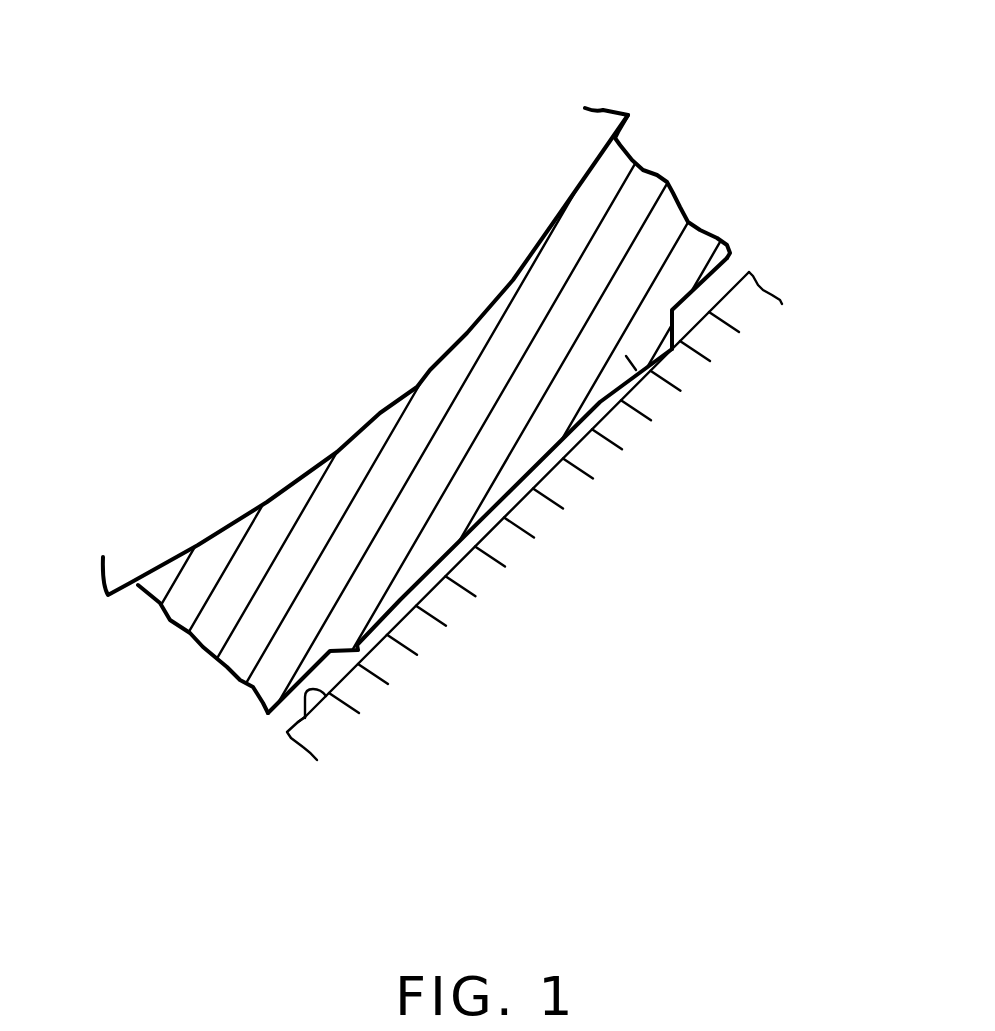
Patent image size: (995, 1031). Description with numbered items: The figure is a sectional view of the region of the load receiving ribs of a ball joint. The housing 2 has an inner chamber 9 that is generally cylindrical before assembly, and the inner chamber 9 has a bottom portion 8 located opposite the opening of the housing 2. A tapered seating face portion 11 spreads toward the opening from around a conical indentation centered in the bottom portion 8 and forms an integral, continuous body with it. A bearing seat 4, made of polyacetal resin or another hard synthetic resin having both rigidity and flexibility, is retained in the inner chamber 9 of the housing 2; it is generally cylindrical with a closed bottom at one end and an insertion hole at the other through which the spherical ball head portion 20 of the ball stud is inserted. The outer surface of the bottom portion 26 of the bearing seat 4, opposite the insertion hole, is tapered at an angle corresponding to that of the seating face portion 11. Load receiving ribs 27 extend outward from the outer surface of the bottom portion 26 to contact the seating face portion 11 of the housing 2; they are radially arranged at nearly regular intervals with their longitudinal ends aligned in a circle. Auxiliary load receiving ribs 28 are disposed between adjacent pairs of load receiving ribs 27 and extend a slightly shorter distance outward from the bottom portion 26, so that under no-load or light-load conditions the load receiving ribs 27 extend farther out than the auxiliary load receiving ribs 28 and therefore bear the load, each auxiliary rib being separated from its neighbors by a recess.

The housing 2 is at (757, 299).
The bearing seat 4 is at (657, 213).
The bottom portion 8 is at (332, 723).
The inner chamber 9 is at (300, 705).
The tapered seating face portion 11 is at (325, 695).
The ball head portion 20 is at (593, 135).
The bottom portion 26 is at (217, 630).
The load receiving ribs 27 is at (540, 466).
The auxiliary load receiving ribs 28 is at (633, 365).